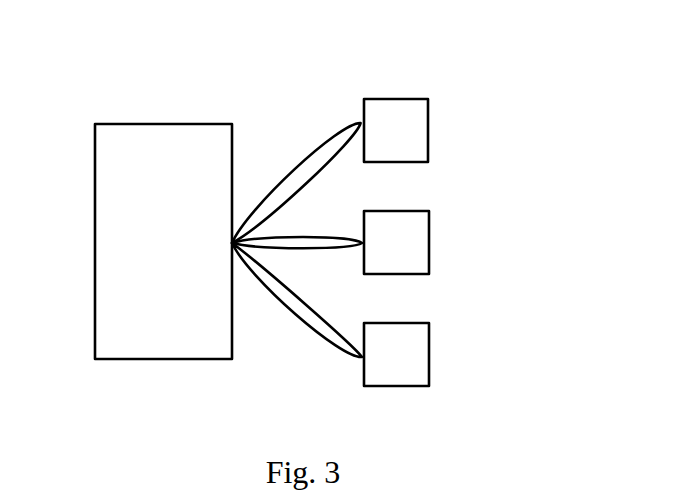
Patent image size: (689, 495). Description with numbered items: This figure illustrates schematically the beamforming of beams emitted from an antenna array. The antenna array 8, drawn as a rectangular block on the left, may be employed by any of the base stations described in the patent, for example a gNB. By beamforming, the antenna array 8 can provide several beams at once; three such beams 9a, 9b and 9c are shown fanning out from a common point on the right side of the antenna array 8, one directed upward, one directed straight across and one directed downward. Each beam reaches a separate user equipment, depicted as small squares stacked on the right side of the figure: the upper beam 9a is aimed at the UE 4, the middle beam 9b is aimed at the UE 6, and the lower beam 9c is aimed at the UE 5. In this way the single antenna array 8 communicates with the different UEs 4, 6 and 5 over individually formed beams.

The antenna array 8 is at (165, 124).
The beam 9a is at (315, 147).
The beam 9b is at (311, 250).
The beam 9c is at (320, 340).
The UE 4 is at (428, 99).
The UE 6 is at (429, 211).
The UE 5 is at (429, 323).